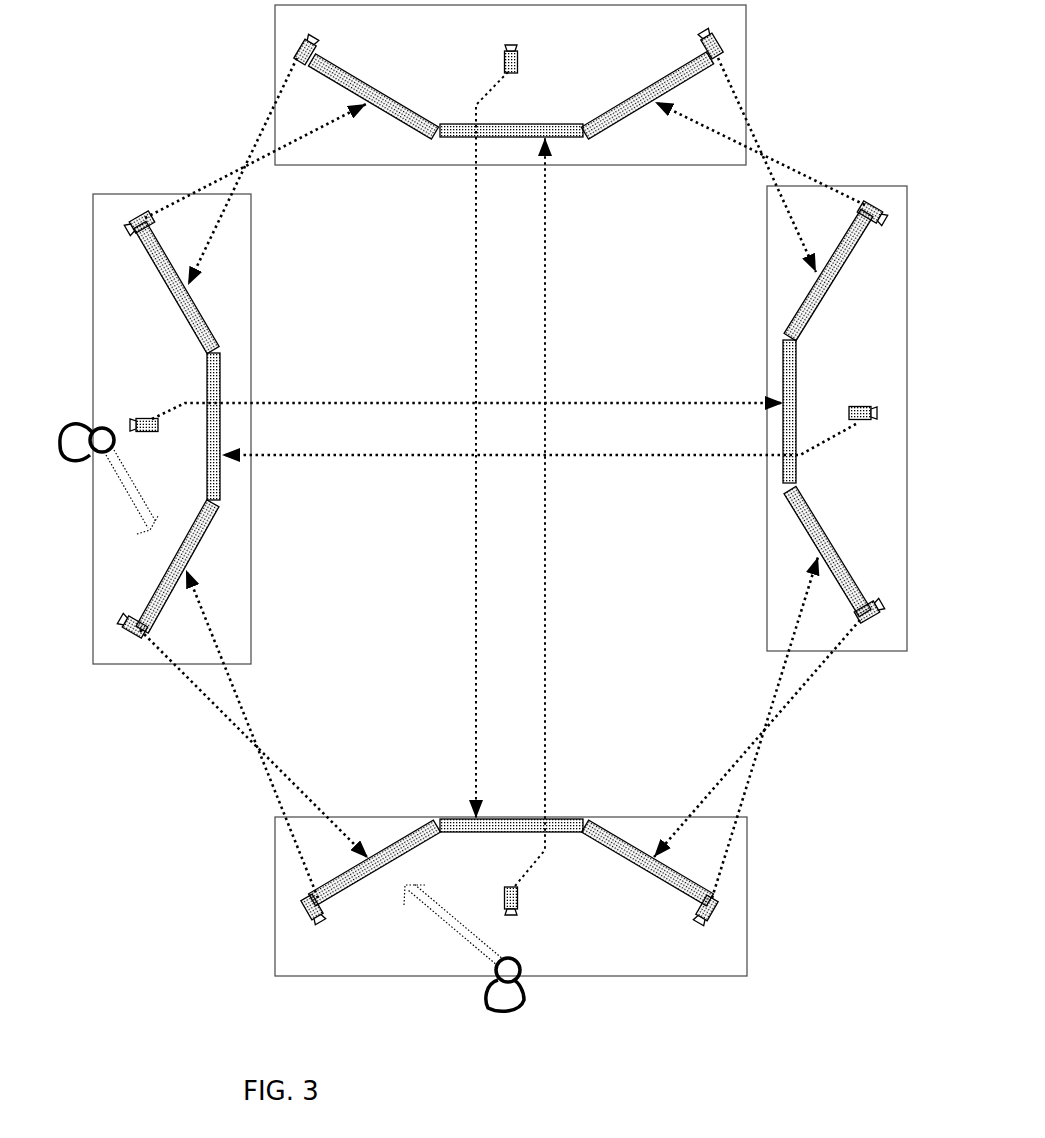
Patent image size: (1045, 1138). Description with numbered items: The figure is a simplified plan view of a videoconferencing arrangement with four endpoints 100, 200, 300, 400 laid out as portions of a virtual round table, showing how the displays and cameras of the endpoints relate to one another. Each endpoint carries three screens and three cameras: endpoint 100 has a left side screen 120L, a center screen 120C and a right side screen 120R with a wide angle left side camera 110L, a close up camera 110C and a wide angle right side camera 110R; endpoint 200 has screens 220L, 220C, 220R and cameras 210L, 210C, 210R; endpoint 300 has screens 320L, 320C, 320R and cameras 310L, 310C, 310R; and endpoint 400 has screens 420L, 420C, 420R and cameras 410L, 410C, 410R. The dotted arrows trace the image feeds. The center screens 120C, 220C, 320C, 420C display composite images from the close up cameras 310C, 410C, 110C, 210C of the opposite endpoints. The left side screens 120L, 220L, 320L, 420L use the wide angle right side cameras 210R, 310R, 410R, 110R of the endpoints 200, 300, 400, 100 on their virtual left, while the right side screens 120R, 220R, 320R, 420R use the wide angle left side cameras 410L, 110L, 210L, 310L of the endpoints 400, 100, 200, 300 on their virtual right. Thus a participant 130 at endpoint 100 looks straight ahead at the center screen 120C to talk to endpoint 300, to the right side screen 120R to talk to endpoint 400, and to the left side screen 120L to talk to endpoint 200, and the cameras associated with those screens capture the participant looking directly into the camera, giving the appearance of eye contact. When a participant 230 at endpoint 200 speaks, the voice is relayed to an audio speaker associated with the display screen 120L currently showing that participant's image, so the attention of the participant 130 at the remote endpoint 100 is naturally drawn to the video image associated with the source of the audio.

The endpoint 100 is at (511, 876).
The wide angle left side camera 110L is at (306, 912).
The close up camera 110C is at (517, 535).
The wide angle right side camera 110R is at (716, 912).
The left side screen 120L is at (378, 863).
The center screen 120C is at (511, 839).
The right side screen 120R is at (648, 863).
The participant 130 is at (464, 964).
The endpoint 200 is at (187, 429).
The wide angle left side camera 210L is at (138, 218).
The close up camera 210C is at (147, 419).
The wide angle right side camera 210R is at (133, 634).
The left side screen 220L is at (187, 287).
The center screen 220C is at (200, 426).
The right side screen 220R is at (185, 566).
The participant 230 is at (101, 461).
The endpoint 300 is at (510, 106).
The wide angle left side camera 310L is at (722, 42).
The close up camera 310C is at (499, 422).
The wide angle right side camera 310R is at (298, 48).
The left side screen 320L is at (647, 95).
The center screen 320C is at (511, 118).
The right side screen 320R is at (373, 96).
The endpoint 400 is at (837, 418).
The wide angle left side camera 410L is at (868, 622).
The close up camera 410C is at (557, 420).
The wide angle right side camera 410R is at (874, 205).
The left side screen 420L is at (827, 551).
The center screen 420C is at (797, 411).
The right side screen 420R is at (828, 274).